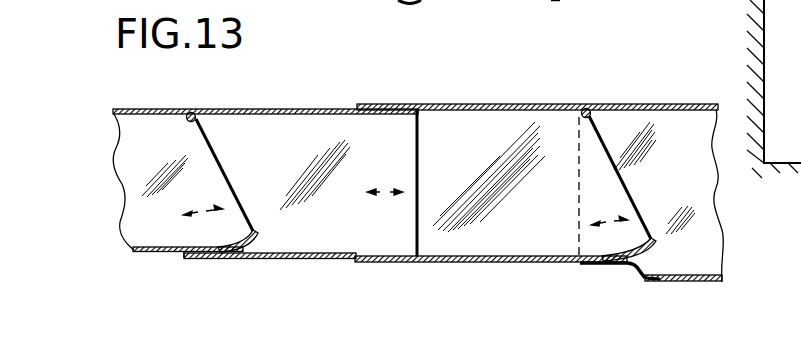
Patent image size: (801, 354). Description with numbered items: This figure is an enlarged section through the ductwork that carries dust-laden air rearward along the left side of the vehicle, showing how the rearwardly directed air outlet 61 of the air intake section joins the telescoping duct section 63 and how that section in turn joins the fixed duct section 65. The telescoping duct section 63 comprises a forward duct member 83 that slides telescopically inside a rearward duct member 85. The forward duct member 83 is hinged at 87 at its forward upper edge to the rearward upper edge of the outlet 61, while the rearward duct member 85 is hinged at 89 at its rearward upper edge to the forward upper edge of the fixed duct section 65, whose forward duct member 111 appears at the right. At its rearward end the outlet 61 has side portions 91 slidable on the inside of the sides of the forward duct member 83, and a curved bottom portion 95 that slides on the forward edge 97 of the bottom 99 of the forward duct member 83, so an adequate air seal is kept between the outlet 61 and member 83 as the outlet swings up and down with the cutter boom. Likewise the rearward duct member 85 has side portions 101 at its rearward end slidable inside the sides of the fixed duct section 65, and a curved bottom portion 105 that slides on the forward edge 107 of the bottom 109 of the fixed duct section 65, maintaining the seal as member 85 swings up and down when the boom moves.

The air outlet 61 is at (160, 253).
The telescoping duct section 63 is at (427, 265).
The fixed duct section 65 is at (686, 280).
The forward duct member 83 is at (322, 68).
The rearward duct member 85 is at (502, 62).
The hinge 87 is at (191, 112).
The hinge 89 is at (609, 70).
The side portions 91 is at (210, 160).
The curved bottom portion 95 is at (253, 240).
The forward edge 97 is at (185, 258).
The bottom 99 is at (245, 259).
The side portions 101 is at (630, 188).
The curved bottom portion 105 is at (646, 254).
The forward edge 107 is at (582, 266).
The bottom 109 is at (659, 282).
The forward duct member 111 is at (674, 104).